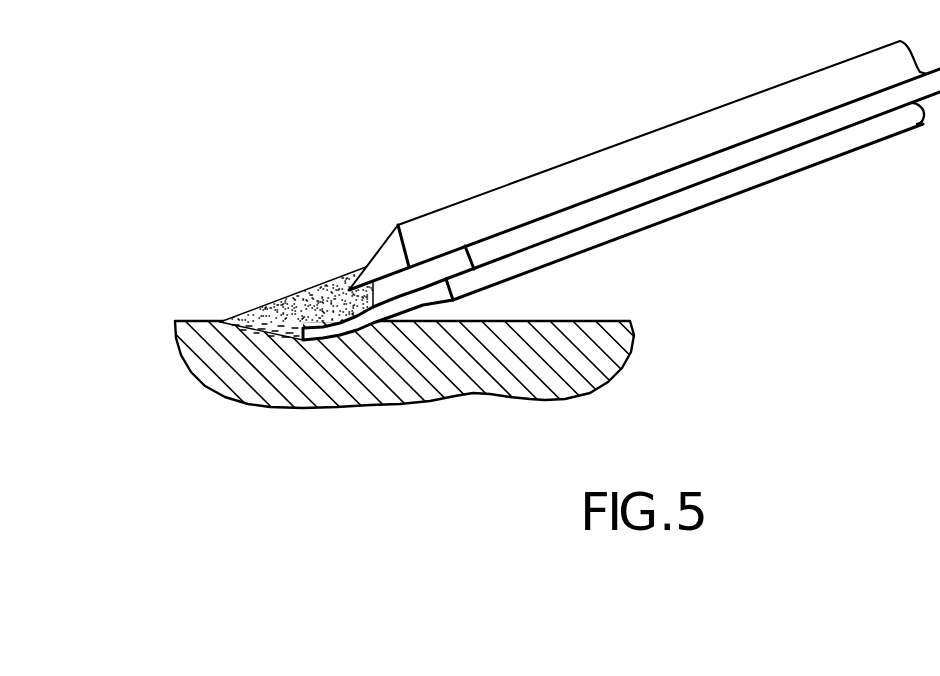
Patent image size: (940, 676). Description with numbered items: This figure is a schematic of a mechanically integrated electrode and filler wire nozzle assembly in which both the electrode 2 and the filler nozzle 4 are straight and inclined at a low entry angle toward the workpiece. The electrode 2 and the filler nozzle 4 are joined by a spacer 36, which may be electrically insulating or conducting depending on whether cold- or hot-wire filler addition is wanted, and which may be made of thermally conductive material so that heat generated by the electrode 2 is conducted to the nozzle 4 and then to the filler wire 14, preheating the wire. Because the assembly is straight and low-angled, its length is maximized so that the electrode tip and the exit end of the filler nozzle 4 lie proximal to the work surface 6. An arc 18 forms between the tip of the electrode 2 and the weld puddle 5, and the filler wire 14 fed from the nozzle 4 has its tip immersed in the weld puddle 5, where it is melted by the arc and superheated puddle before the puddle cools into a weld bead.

The electrode 2 is at (520, 178).
The spacer 36 is at (641, 186).
The filler nozzle 4 is at (750, 189).
The filler wire 14 is at (420, 306).
The arc 18 is at (321, 287).
The work surface 6 is at (591, 320).
The weld puddle 5 is at (257, 339).